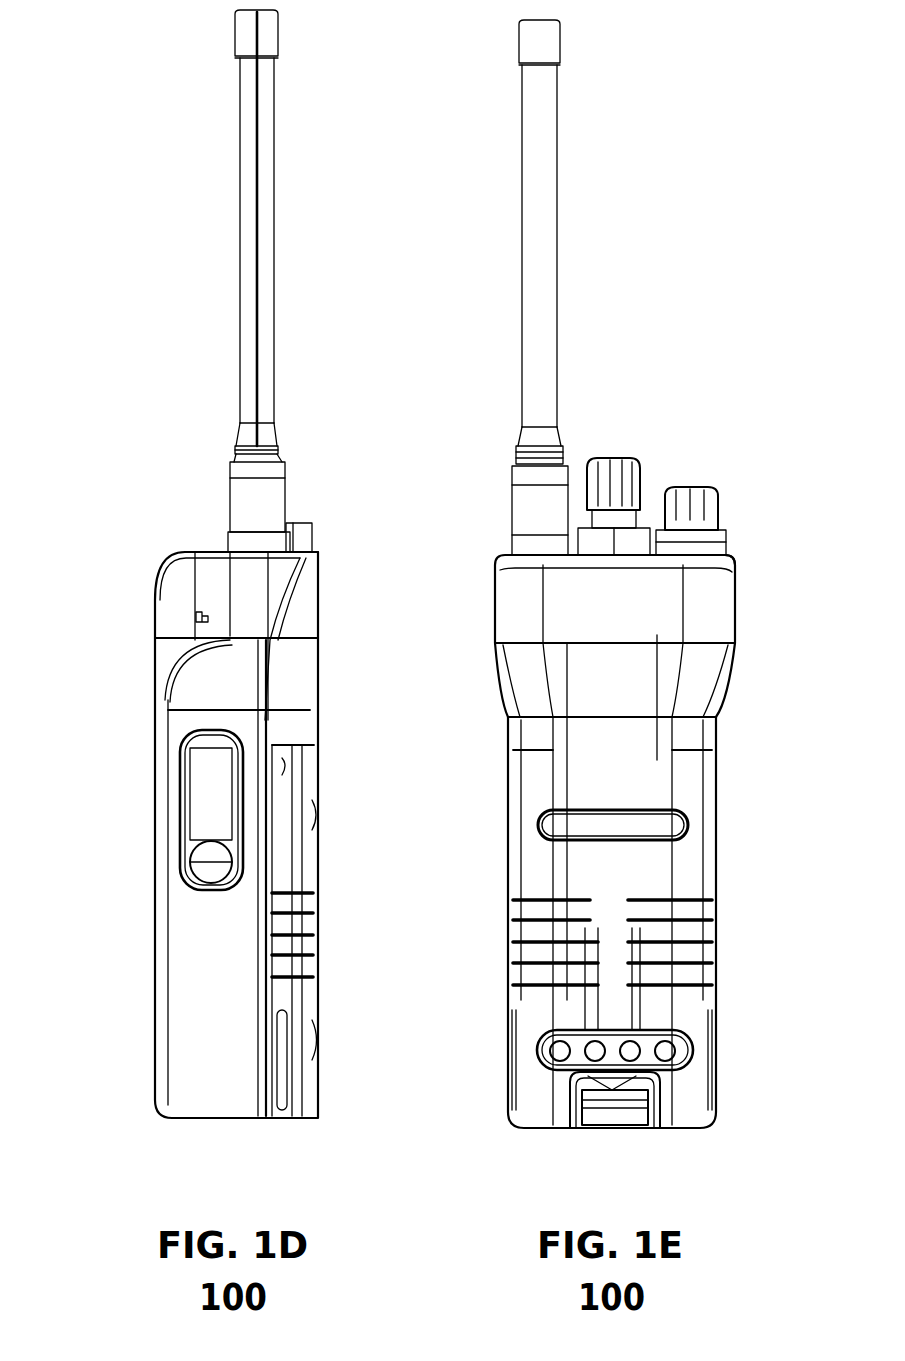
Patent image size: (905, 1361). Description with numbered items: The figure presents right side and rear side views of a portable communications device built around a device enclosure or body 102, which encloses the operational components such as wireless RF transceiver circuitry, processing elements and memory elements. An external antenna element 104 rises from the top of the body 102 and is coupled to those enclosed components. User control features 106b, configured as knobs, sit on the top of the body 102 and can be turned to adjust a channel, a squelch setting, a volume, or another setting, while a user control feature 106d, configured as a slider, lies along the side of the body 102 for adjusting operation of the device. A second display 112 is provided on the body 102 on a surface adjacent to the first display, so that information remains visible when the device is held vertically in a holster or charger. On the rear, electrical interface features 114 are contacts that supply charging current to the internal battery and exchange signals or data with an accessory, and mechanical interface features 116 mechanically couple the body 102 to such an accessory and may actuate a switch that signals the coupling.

In FIG. 1D, the body 102 is at (200, 960).
In FIG. 1E, the body 102 is at (535, 605).
In FIG. 1D, the external antenna element 104 is at (260, 195).
In FIG. 1E, the external antenna element 104 is at (553, 189).
In FIG. 1E, the user control features 106b is at (688, 460).
In FIG. 1D, the user control feature 106d is at (112, 907).
In FIG. 1D, the second display 112 is at (167, 560).
In FIG. 1E, the second display 112 is at (755, 512).
In FIG. 1E, the electrical interface features 114 is at (735, 1015).
In FIG. 1E, the mechanical interface features 116 is at (577, 1145).